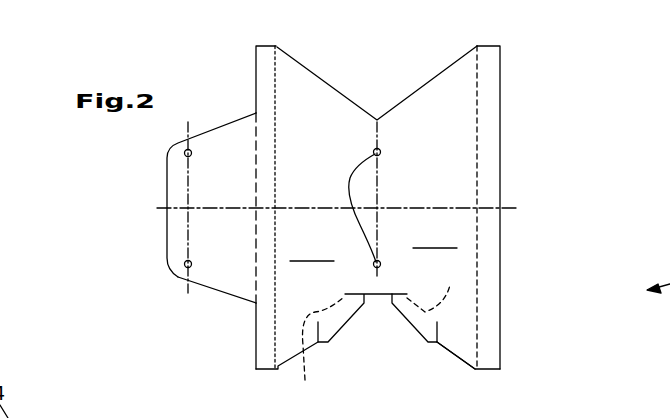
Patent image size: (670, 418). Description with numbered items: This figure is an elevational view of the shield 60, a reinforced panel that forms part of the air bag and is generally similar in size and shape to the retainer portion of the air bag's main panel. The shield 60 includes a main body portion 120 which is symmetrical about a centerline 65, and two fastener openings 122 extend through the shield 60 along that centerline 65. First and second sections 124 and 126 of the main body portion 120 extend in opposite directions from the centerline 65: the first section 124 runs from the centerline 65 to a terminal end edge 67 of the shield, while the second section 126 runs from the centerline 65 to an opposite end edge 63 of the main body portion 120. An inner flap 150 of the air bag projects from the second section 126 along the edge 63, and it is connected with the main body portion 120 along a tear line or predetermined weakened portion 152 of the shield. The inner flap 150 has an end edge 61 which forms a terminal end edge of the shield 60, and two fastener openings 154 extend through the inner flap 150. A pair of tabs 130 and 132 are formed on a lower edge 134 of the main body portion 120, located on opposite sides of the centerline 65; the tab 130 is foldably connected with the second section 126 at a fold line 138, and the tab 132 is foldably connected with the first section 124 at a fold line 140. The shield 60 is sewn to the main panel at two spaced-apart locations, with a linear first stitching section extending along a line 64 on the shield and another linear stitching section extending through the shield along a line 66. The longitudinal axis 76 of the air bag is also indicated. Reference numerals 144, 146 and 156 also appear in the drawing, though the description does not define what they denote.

The shield 60 is at (572, 199).
The end edge 61 is at (167, 233).
The end edge 63 is at (256, 73).
The line 64 is at (276, 130).
The centerline 65 is at (378, 173).
The line 66 is at (477, 95).
The terminal end edge 67 is at (500, 265).
The longitudinal axis 76 is at (510, 207).
The main body portion 120 is at (518, 60).
The fastener openings 122 is at (340, 208).
The first section 124 is at (435, 237).
The second section 126 is at (312, 250).
The tab 130 is at (342, 320).
The tab 132 is at (412, 325).
The lower edge 134 is at (437, 356).
The fold line 138 is at (316, 351).
The fold line 140 is at (436, 285).
The flange lower portion 144 is at (493, 324).
The flange corner 146 is at (267, 347).
The inner flap 150 is at (230, 265).
The tear line 152 is at (252, 198).
The fastener openings 154 is at (174, 152).
The lower hole 156 is at (172, 250).